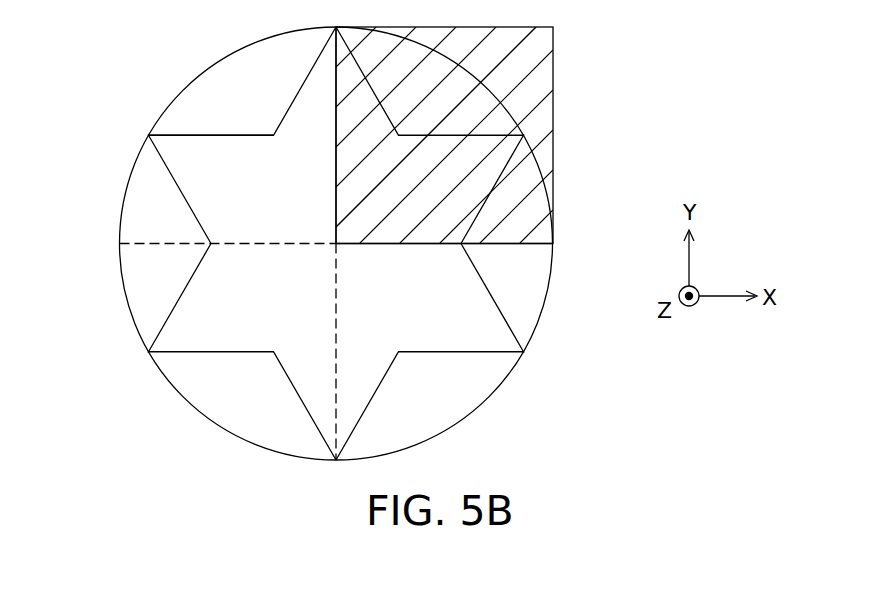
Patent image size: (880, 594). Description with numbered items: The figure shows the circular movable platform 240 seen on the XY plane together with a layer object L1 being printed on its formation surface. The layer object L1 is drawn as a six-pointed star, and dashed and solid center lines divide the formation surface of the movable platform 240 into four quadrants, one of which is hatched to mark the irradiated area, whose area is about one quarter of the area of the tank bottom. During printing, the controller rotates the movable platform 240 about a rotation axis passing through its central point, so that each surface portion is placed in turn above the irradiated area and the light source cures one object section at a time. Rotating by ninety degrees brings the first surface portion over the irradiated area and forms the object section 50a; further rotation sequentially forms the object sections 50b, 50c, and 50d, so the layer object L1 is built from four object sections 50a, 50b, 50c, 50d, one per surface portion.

The movable platform 240 is at (243, 48).
The layer object L1 is at (225, 135).
The object section 50a is at (480, 180).
The object section 50b is at (480, 312).
The object section 50c is at (190, 311).
The object section 50d is at (190, 179).